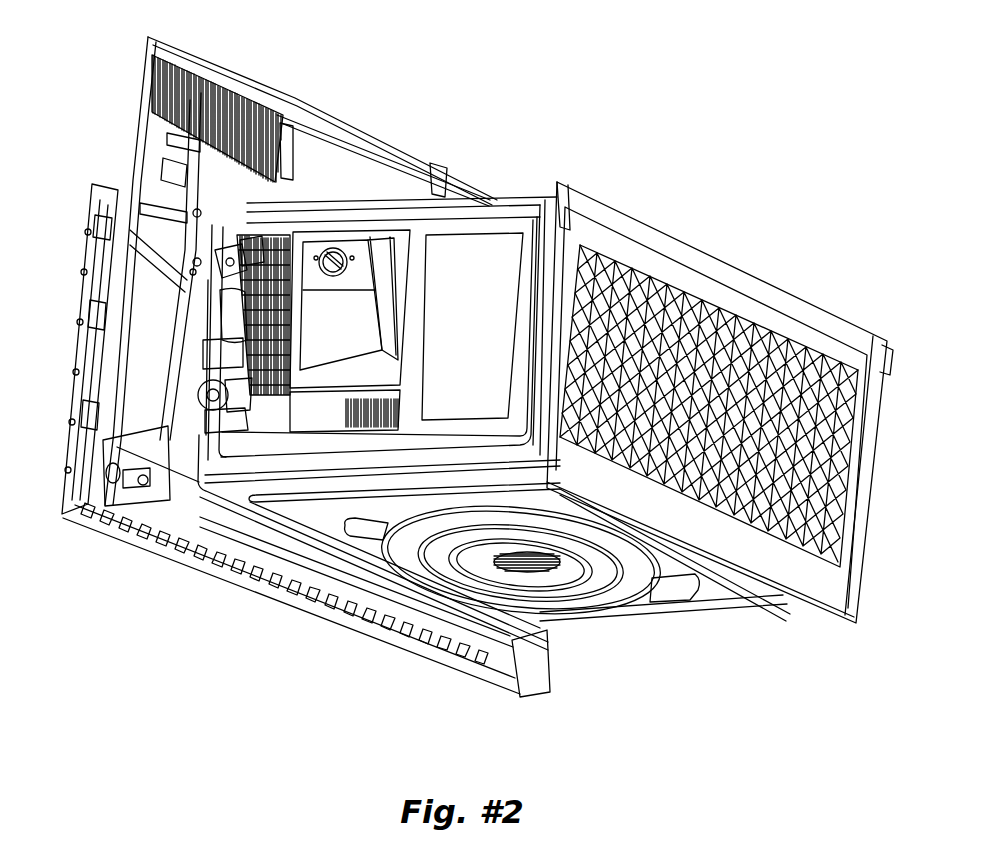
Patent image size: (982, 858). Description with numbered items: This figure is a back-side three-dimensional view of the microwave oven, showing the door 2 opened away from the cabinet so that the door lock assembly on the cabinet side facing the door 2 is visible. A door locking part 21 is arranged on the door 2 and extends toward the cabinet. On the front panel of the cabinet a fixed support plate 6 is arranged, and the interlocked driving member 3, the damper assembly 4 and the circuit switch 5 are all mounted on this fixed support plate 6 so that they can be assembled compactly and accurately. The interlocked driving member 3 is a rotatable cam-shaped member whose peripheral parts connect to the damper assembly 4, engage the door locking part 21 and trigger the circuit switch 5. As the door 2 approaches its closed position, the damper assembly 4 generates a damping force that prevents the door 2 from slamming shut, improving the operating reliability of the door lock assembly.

The door 2 is at (97, 186).
The door locking part 21 is at (70, 290).
The interlocked driving member 3 is at (227, 263).
The damper assembly 4 is at (337, 227).
The circuit switch 5 is at (223, 257).
The fixed support plate 6 is at (213, 330).